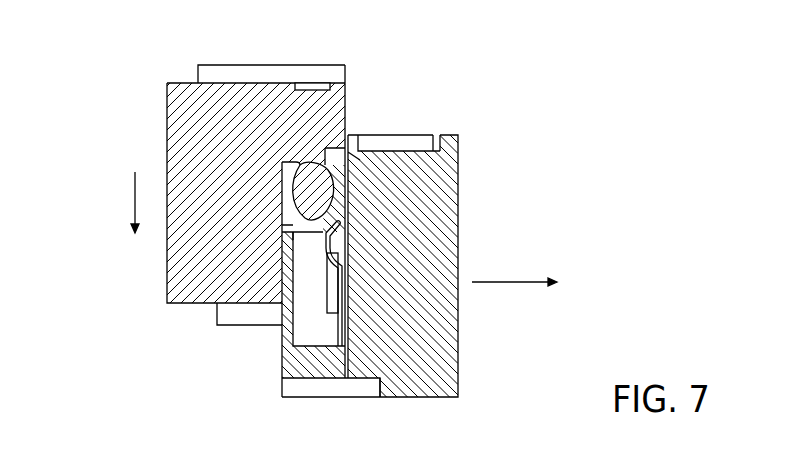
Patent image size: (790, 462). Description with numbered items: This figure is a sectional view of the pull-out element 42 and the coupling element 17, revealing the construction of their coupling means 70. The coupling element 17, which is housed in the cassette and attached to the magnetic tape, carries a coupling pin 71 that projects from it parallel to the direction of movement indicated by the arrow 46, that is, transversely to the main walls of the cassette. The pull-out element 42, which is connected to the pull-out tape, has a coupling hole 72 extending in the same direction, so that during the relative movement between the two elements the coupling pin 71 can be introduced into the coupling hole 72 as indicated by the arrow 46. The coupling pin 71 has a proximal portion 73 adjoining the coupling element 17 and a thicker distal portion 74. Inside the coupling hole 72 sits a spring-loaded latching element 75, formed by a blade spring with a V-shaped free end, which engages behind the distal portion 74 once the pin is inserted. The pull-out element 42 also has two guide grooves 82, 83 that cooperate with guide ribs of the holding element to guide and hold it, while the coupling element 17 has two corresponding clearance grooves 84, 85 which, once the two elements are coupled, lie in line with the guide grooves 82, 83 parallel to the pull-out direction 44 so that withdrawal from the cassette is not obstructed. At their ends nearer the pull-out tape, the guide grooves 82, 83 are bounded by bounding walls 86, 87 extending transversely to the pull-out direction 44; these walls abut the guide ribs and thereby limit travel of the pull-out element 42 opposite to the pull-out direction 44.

The coupling element 17 is at (167, 83).
The pull-out element 42 is at (462, 396).
The pull-out direction 44 is at (507, 284).
The direction of movement 46 is at (130, 192).
The coupling means 70 is at (335, 173).
The coupling pin 71 is at (297, 210).
The coupling hole 72 is at (305, 330).
The proximal portion 73 is at (295, 188).
The distal portion 74 is at (318, 188).
The spring-loaded latching element 75 is at (339, 252).
The guide groove 82 is at (392, 150).
The guide groove 83 is at (327, 380).
The clearance groove 84 is at (249, 83).
The clearance groove 85 is at (233, 304).
The bounding wall 86 is at (437, 135).
The bounding wall 87 is at (380, 389).